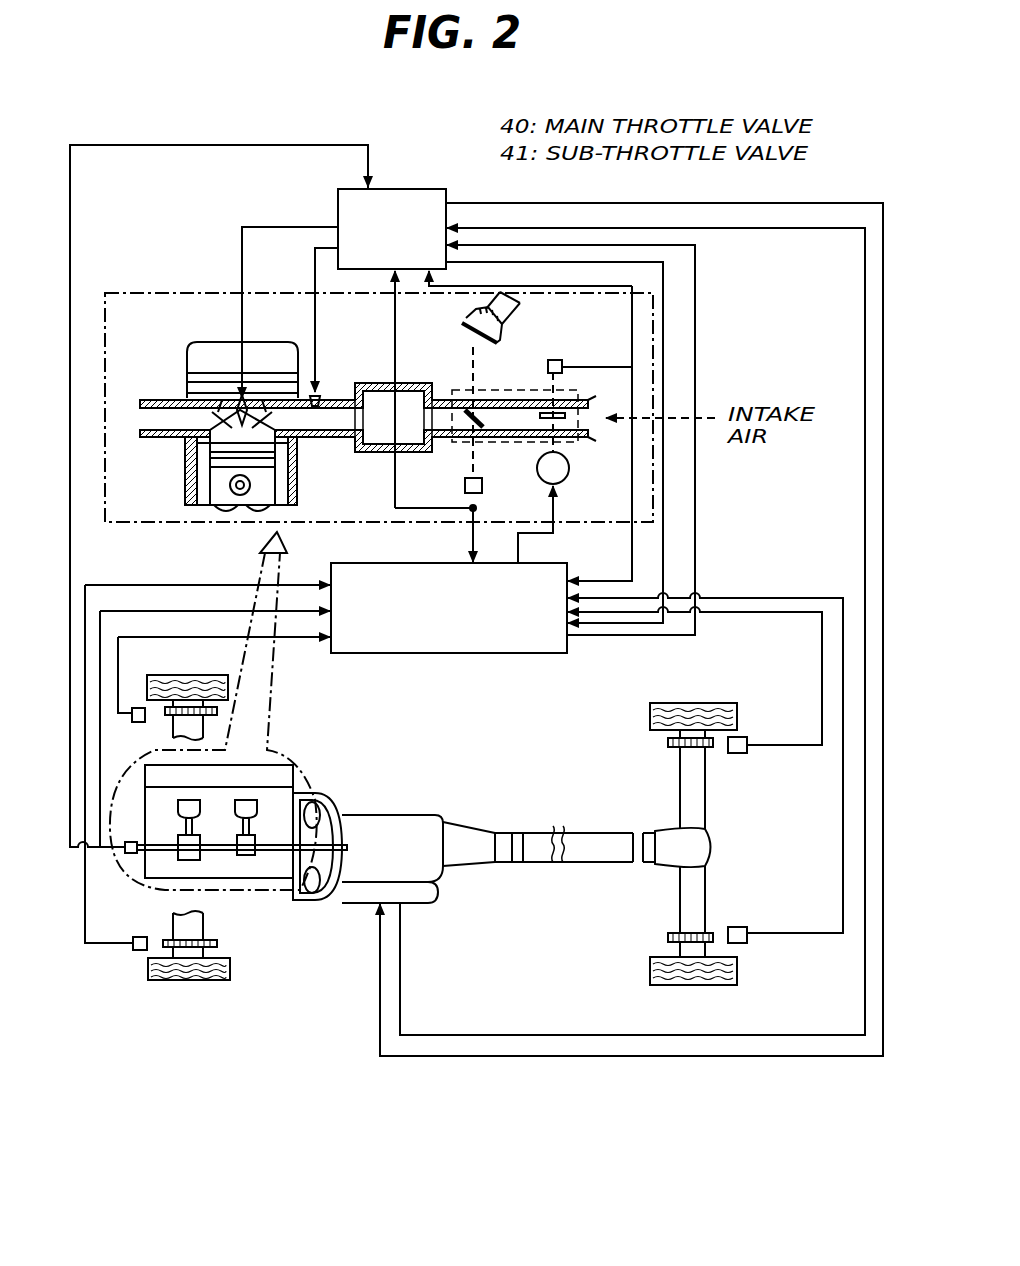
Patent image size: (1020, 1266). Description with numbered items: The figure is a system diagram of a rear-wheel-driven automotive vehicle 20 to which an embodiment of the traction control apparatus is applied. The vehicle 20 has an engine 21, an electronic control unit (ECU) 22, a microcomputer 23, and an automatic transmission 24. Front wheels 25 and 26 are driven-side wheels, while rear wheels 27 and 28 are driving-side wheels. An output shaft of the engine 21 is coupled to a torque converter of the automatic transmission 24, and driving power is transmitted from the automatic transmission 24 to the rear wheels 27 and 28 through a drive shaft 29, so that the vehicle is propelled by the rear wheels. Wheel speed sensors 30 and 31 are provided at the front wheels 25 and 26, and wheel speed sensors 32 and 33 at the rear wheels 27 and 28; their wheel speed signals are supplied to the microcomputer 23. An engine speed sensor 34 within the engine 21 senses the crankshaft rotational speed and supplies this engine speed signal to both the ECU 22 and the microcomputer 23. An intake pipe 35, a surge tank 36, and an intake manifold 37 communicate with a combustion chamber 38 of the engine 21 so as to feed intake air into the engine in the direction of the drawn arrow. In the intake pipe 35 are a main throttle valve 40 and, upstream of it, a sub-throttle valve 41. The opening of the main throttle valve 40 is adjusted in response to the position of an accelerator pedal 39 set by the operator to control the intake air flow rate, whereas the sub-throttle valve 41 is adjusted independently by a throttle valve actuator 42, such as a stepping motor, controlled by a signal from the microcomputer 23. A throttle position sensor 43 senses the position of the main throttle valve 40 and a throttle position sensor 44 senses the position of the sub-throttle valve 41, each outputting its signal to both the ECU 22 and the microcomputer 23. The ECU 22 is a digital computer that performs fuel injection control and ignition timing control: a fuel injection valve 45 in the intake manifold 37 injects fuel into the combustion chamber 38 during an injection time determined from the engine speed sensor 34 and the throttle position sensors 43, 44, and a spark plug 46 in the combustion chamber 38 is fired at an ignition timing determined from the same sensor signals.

The automotive vehicle 20 is at (422, 1099).
The engine 21 is at (152, 290).
The electronic control unit (ECU) 22 is at (393, 187).
The microcomputer 23 is at (430, 562).
The automatic transmission 24 is at (383, 818).
The front wheel 25 is at (178, 675).
The front wheel 26 is at (200, 982).
The rear wheel 27 is at (665, 703).
The rear wheel 28 is at (702, 985).
The drive shaft 29 is at (595, 855).
The wheel speed sensor 30 is at (133, 722).
The wheel speed sensor 31 is at (135, 952).
The wheel speed sensor 32 is at (735, 755).
The wheel speed sensor 33 is at (740, 925).
The engine speed sensor 34 is at (133, 856).
The intake pipe 35 is at (585, 440).
The surge tank 36 is at (418, 452).
The intake manifold 37 is at (327, 438).
The combustion chamber 38 is at (223, 440).
The accelerator pedal 39 is at (462, 327).
The main throttle valve 40 is at (487, 412).
The sub-throttle valve 41 is at (566, 410).
The throttle valve actuator 42 is at (568, 475).
The throttle position sensor 43 is at (482, 487).
The throttle position sensor 44 is at (557, 360).
The fuel injection valve 45 is at (320, 393).
The spark plug 46 is at (250, 395).